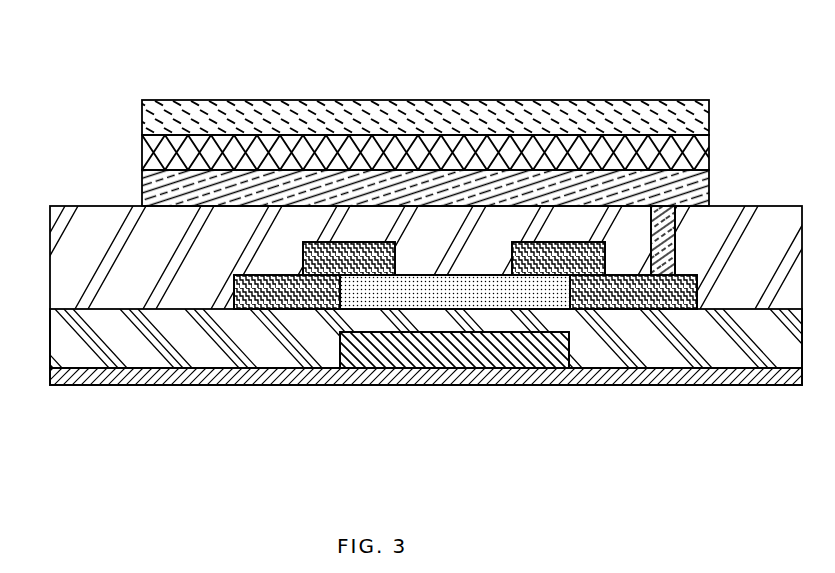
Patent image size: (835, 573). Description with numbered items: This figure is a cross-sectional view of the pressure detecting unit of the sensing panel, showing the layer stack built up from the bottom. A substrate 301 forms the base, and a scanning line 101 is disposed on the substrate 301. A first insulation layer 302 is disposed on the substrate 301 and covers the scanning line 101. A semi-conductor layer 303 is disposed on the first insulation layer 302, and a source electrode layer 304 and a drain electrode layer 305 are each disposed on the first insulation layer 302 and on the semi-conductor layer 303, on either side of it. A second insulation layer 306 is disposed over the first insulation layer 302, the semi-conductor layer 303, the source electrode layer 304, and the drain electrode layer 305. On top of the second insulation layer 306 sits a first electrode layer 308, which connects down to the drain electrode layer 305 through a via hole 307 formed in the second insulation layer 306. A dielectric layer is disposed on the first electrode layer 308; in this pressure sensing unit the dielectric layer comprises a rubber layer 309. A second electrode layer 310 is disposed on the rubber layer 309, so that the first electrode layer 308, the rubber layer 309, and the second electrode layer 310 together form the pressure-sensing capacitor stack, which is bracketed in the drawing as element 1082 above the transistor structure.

The light emitting element 1082 is at (368, 116).
The second electrode layer 310 is at (389, 113).
The rubber layer 309 is at (142, 151).
The first electrode layer 308 is at (142, 181).
The via hole 307 is at (675, 245).
The second insulation layer 306 is at (730, 309).
The drain electrode layer 305 is at (618, 309).
The source electrode layer 304 is at (287, 309).
The semi-conductor layer 303 is at (506, 309).
The scanning line 101 is at (380, 368).
The first insulation layer 302 is at (213, 368).
The substrate 301 is at (162, 386).